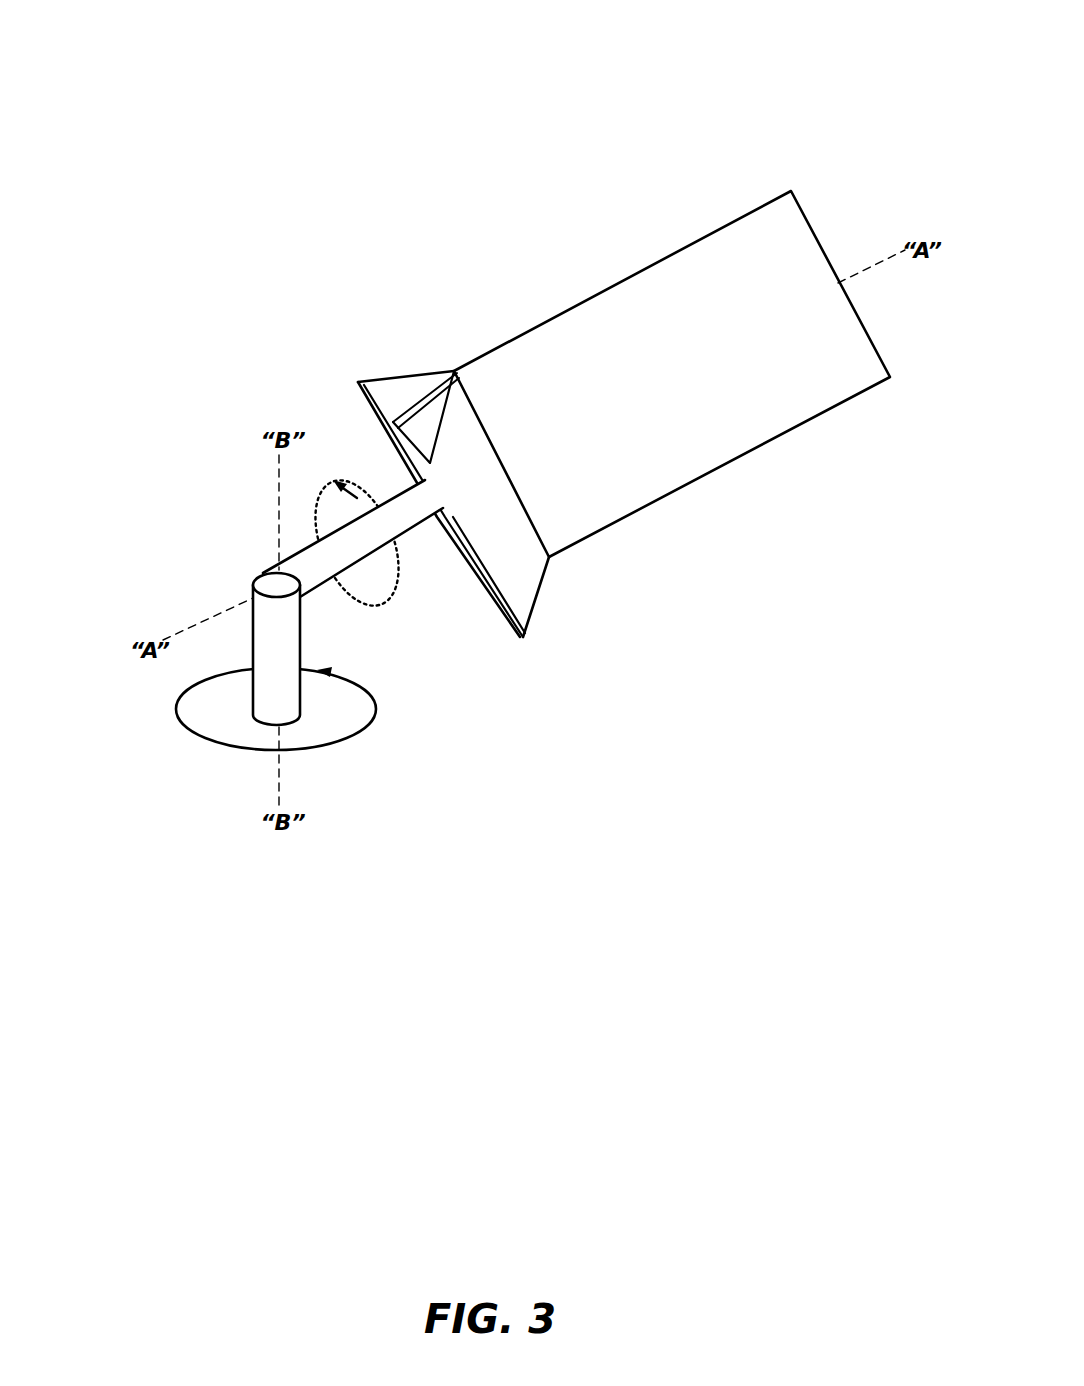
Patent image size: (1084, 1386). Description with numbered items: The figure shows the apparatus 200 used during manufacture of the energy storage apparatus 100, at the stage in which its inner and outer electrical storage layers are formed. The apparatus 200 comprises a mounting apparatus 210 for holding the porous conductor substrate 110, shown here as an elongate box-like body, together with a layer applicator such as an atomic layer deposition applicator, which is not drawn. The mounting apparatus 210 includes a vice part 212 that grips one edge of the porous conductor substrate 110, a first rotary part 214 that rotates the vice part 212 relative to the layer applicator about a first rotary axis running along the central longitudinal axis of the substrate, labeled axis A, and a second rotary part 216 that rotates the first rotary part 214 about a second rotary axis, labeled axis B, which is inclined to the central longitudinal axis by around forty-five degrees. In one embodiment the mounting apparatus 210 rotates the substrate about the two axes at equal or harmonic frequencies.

The energy storage apparatus 100 is at (672, 374).
The porous conductor substrate 110 is at (663, 307).
The apparatus 200 is at (470, 445).
The mounting apparatus 210 is at (342, 564).
The vice part 212 is at (543, 593).
The first rotary part 214 is at (410, 537).
The second rotary part 216 is at (298, 638).